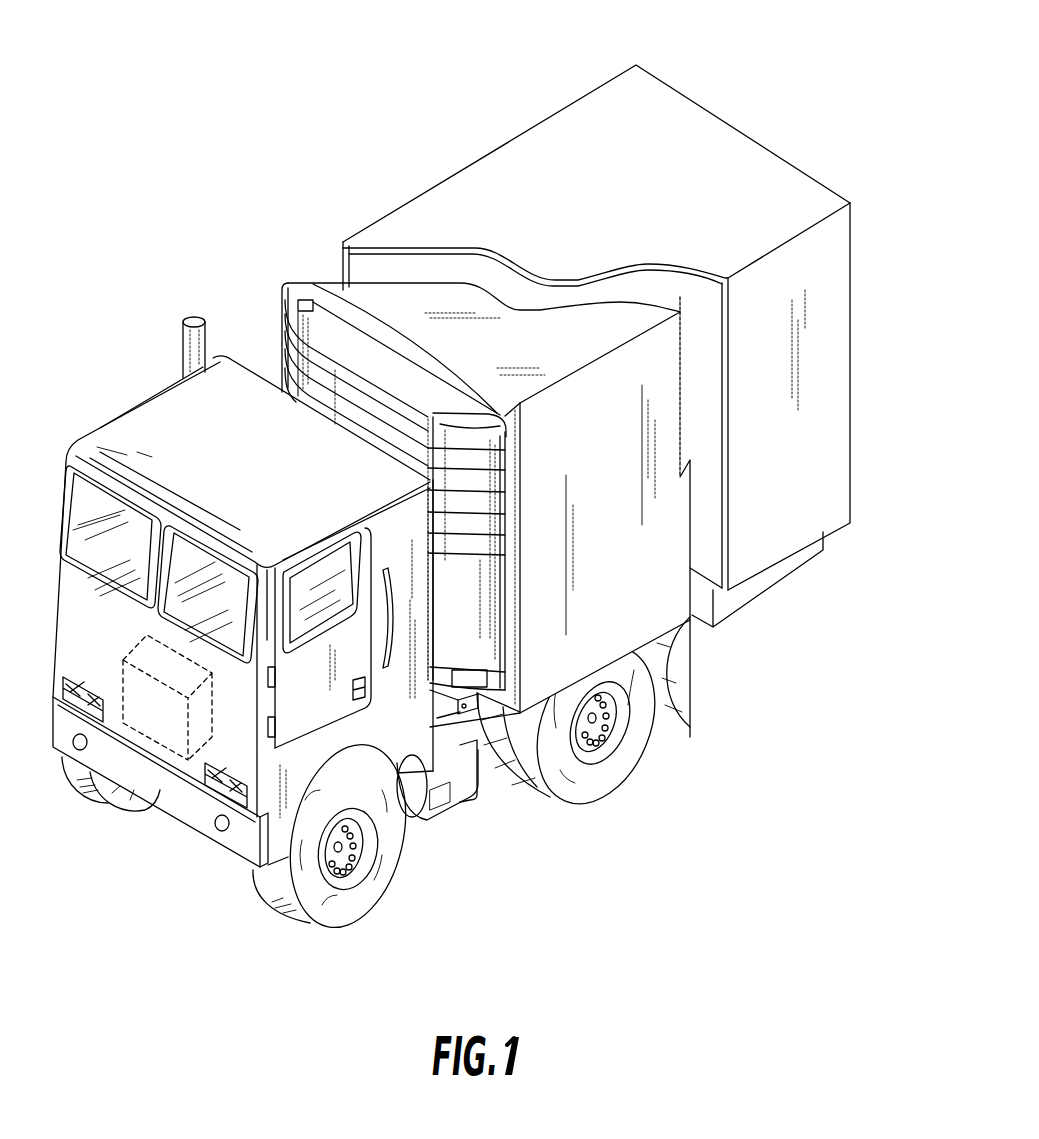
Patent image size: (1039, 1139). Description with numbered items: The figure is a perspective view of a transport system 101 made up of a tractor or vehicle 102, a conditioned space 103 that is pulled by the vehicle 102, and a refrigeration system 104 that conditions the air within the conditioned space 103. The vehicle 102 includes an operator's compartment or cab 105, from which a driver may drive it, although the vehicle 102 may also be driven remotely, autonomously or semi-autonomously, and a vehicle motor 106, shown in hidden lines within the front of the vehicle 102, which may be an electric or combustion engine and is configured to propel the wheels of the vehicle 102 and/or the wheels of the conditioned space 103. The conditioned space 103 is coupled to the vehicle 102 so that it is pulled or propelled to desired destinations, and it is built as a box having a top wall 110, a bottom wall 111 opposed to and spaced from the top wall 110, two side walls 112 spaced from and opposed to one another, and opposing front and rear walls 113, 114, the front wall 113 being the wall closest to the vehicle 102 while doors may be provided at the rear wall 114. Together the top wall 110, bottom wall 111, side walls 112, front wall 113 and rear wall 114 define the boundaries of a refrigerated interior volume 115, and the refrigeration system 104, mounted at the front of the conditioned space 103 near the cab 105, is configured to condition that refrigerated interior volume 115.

The transport system 101 is at (164, 234).
The vehicle 102 is at (110, 428).
The conditioned space 103 is at (640, 293).
The refrigeration system 104 is at (311, 292).
The cab 105 is at (328, 590).
The vehicle motor 106 is at (160, 747).
The top wall 110 is at (570, 118).
The bottom wall 111 is at (840, 513).
The side wall 112 is at (838, 297).
The front wall 113 is at (478, 390).
The rear wall 114 is at (797, 167).
The refrigerated interior volume 115 is at (445, 172).